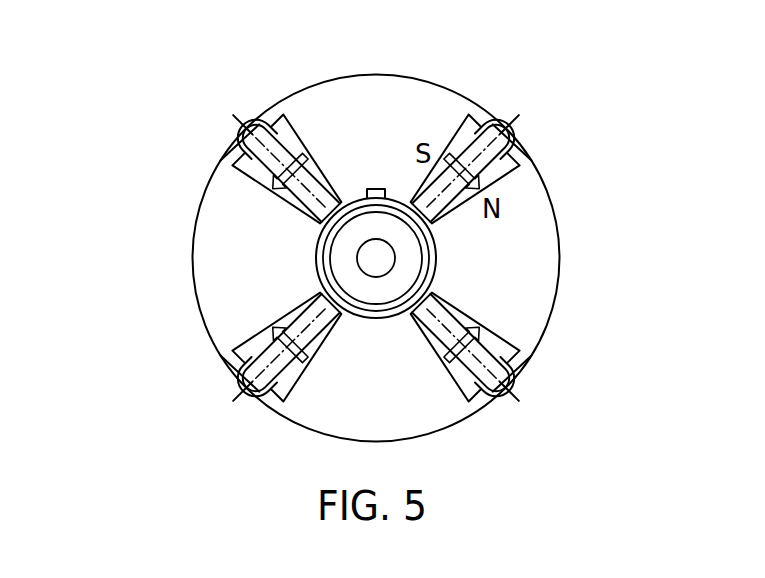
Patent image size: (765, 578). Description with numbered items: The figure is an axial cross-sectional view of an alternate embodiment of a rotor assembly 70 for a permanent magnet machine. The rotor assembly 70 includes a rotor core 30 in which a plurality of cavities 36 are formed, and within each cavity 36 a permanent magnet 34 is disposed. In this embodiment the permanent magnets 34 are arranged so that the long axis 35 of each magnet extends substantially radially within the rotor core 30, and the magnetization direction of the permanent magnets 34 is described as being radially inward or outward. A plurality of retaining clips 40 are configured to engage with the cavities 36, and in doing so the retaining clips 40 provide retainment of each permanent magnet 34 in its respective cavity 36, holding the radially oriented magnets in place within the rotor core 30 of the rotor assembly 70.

The rotor core 30 is at (561, 257).
The permanent magnet 34 is at (262, 160).
The long axis 35 is at (518, 118).
The cavity 36 is at (250, 340).
The retaining clip 40 is at (250, 124).
The rotor assembly 70 is at (118, 33).